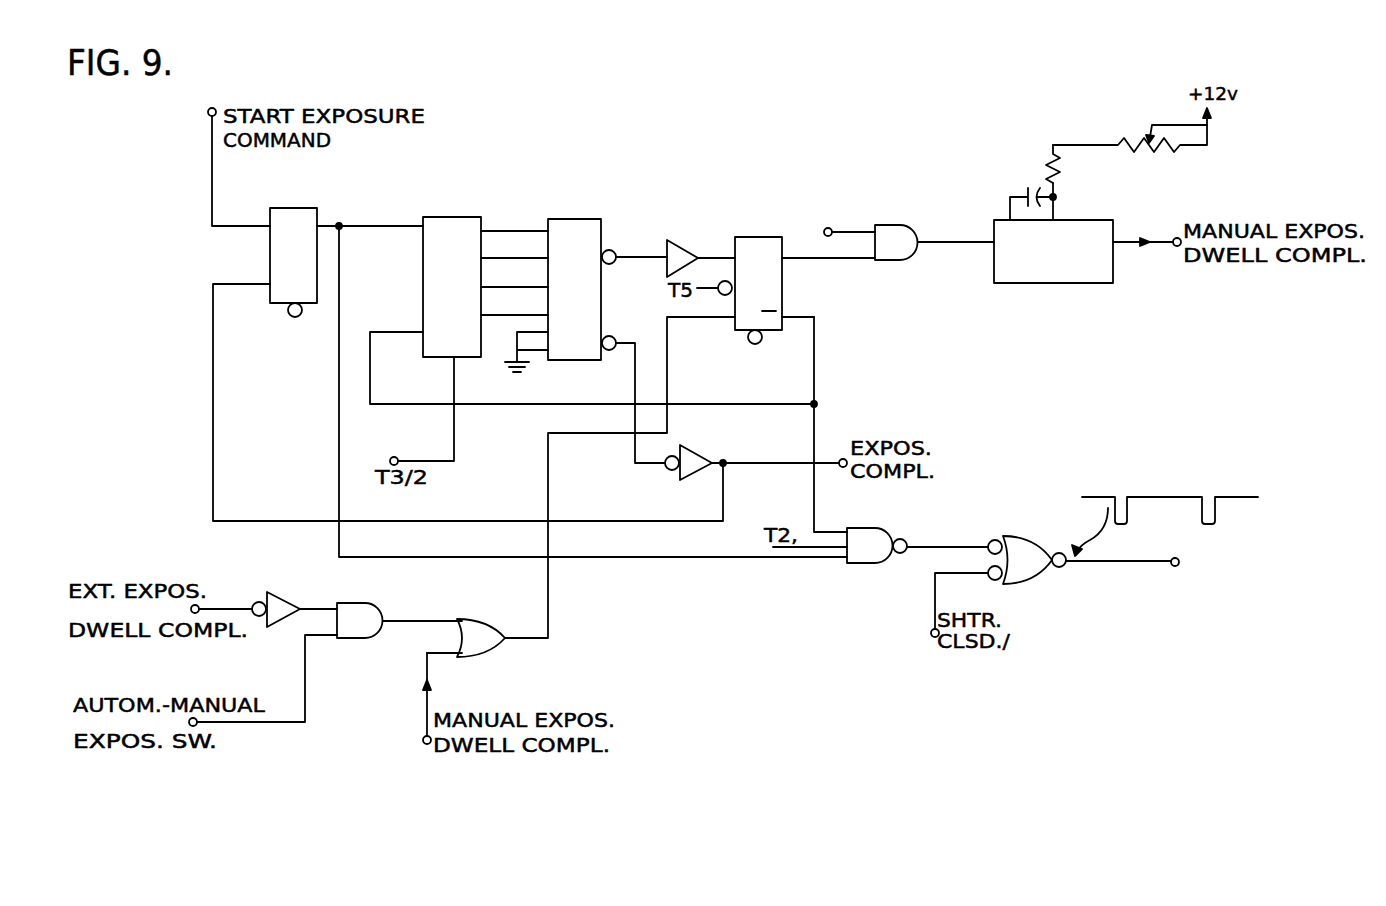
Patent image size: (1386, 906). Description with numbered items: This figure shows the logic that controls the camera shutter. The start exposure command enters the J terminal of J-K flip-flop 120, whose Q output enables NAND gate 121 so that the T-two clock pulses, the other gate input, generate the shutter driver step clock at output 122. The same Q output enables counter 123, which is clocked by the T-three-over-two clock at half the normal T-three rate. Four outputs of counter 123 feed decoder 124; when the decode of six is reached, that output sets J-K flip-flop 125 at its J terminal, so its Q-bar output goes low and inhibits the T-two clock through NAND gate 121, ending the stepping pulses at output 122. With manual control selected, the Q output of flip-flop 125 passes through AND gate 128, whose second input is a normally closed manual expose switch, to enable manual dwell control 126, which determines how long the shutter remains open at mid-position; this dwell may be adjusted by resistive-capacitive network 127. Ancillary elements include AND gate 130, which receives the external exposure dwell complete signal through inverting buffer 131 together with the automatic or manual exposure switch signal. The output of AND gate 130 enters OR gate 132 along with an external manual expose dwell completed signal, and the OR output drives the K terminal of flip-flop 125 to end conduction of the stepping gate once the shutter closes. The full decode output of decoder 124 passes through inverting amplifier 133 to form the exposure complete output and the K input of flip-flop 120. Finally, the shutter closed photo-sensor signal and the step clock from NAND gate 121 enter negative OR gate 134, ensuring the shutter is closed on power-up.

The J-K flip-flop 120 is at (275, 210).
The NAND gate 121 is at (887, 531).
The output 122 is at (1182, 566).
The counter 123 is at (429, 217).
The decoder 124 is at (547, 221).
The J-K flip-flop 125 is at (735, 237).
The manual dwell control 126 is at (1075, 222).
The resistive-capacitive network 127 is at (1063, 163).
The AND gate 128 is at (879, 230).
The AND gate 130 is at (338, 608).
The inverting amplifier or buffer 131 is at (284, 596).
The OR gate 132 is at (458, 625).
The inverting amplifier 133 is at (688, 457).
The negative OR gate 134 is at (1036, 542).